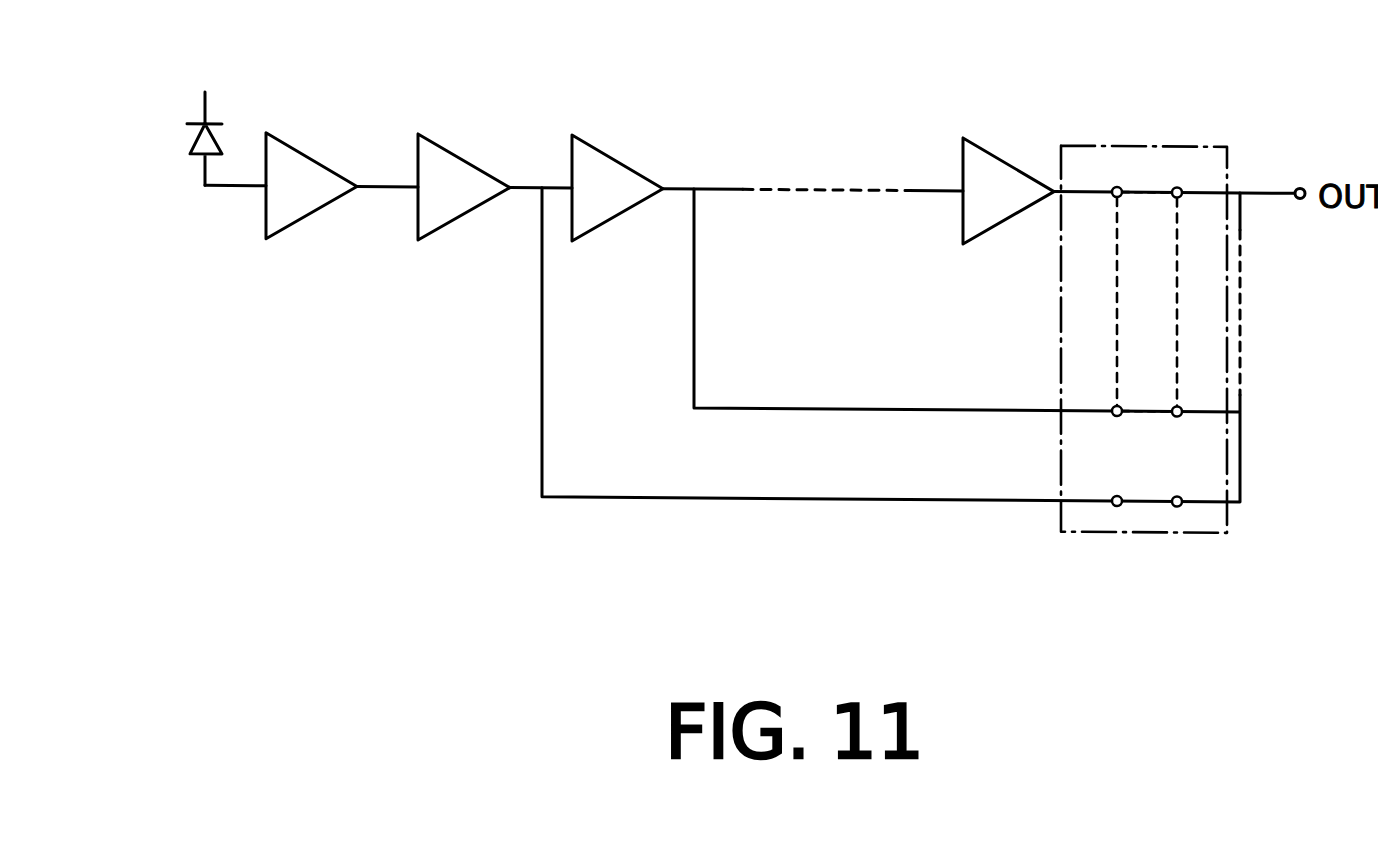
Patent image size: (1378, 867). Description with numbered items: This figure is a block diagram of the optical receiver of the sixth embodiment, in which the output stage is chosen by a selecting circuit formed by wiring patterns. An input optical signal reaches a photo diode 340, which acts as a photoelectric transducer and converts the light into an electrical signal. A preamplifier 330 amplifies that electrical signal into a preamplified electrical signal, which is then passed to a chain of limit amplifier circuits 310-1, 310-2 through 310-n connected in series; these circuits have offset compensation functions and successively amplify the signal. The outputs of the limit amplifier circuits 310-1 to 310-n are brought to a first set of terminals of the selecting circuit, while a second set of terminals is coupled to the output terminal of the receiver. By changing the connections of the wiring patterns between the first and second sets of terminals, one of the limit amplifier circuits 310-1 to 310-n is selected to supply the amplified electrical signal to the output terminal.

The photo diode 340 is at (190, 137).
The preamplifier 330 is at (293, 226).
The limit amplifier circuit 310-1 is at (450, 143).
The limit amplifier circuit 310-2 is at (598, 143).
The limit amplifier circuit 310-n is at (988, 143).